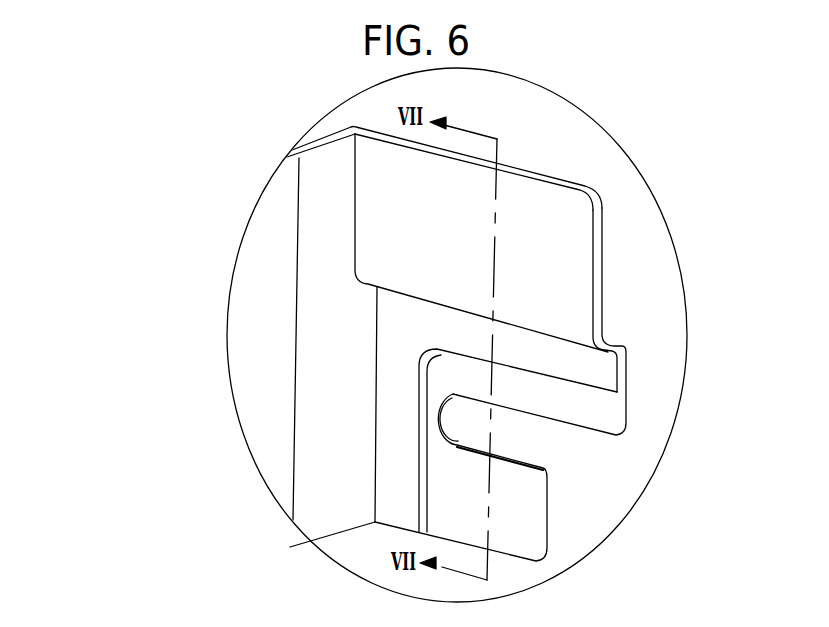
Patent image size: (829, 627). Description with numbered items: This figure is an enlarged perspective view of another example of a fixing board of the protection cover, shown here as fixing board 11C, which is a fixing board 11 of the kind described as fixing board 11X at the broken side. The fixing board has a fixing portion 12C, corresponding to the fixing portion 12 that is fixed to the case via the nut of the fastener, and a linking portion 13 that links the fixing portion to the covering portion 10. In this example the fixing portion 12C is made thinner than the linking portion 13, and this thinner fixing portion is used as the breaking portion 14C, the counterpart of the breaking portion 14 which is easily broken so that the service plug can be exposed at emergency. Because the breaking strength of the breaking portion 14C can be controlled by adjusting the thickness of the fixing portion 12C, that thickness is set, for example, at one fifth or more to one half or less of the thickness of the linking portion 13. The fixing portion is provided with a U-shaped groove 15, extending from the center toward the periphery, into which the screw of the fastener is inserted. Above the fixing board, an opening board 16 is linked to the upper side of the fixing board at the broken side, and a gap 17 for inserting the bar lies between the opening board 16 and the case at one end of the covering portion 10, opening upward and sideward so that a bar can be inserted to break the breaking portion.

The covering portion 10 is at (248, 343).
The fixing board 11C is at (180, 432).
The fixing board at the broken side 11X is at (322, 359).
The fixing board 11 is at (398, 359).
The fixing portion 12C is at (447, 488).
The fixing portion 12 is at (453, 448).
The linking portion 13 is at (397, 403).
The breaking portion 14C is at (443, 358).
The breaking portion 14 is at (481, 243).
The U-shaped groove 15 is at (530, 445).
The opening board 16 is at (530, 207).
The gap 17 is at (612, 263).